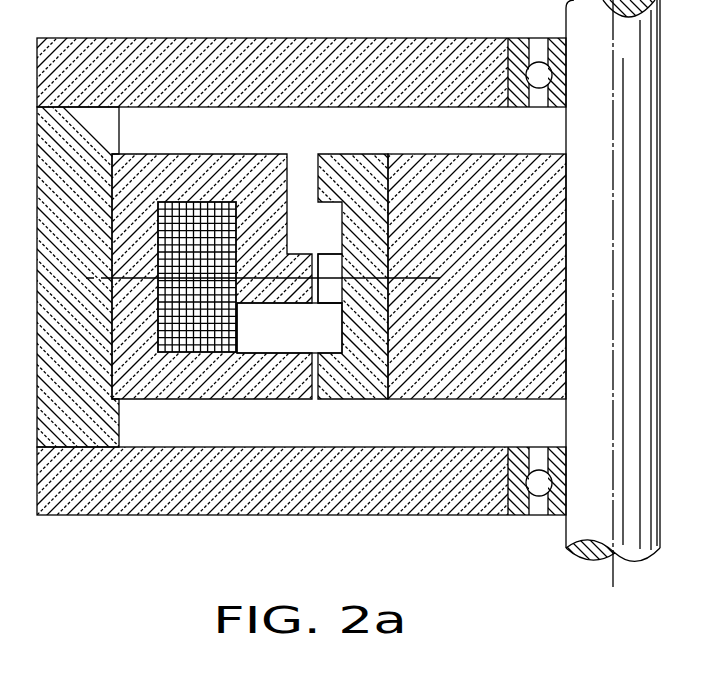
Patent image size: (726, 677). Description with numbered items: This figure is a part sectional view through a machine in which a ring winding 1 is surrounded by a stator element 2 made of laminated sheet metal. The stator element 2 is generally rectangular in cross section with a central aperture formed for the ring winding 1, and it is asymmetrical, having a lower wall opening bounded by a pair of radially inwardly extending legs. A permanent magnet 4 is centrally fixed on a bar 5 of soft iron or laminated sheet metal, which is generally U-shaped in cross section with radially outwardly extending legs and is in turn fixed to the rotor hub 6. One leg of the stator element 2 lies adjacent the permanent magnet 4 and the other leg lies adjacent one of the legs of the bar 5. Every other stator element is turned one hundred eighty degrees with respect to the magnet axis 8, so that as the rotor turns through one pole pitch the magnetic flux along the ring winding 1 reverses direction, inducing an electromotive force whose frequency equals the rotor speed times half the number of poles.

The ring winding 1 is at (183, 352).
The stator element 2 is at (198, 167).
The permanent magnet 4 is at (337, 255).
The bar 5 is at (362, 165).
The rotor hub 6 is at (467, 387).
The magnet axis 8 is at (268, 278).